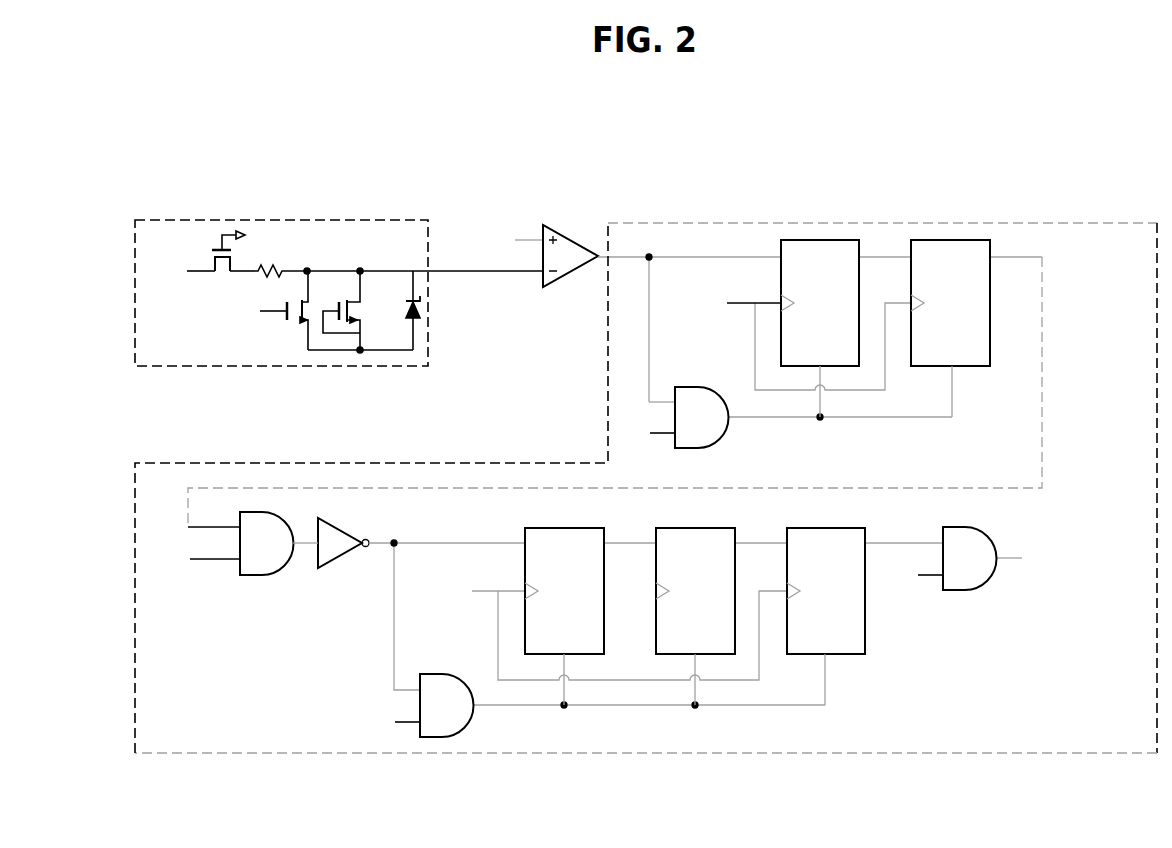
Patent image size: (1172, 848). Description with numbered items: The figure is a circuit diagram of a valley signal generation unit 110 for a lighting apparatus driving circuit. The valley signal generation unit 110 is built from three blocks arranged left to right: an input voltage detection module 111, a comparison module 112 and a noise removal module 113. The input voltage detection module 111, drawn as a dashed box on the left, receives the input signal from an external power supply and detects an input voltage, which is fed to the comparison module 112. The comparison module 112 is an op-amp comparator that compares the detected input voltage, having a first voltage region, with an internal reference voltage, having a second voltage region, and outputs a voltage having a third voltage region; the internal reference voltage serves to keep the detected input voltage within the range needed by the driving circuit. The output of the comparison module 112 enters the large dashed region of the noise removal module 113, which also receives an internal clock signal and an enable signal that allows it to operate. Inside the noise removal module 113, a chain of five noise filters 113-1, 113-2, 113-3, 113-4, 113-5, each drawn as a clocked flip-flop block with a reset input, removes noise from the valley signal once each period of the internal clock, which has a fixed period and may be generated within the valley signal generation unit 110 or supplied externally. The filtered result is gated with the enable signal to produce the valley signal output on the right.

The valley signal generation unit 110 is at (622, 120).
The input voltage detection module 111 is at (283, 221).
The comparison module 112 is at (573, 226).
The noise removal module 113 is at (752, 224).
The noise filter 113-1 is at (820, 239).
The noise filter 113-2 is at (958, 236).
The noise filter 113-3 is at (583, 657).
The noise filter 113-4 is at (713, 657).
The noise filter 113-5 is at (852, 657).